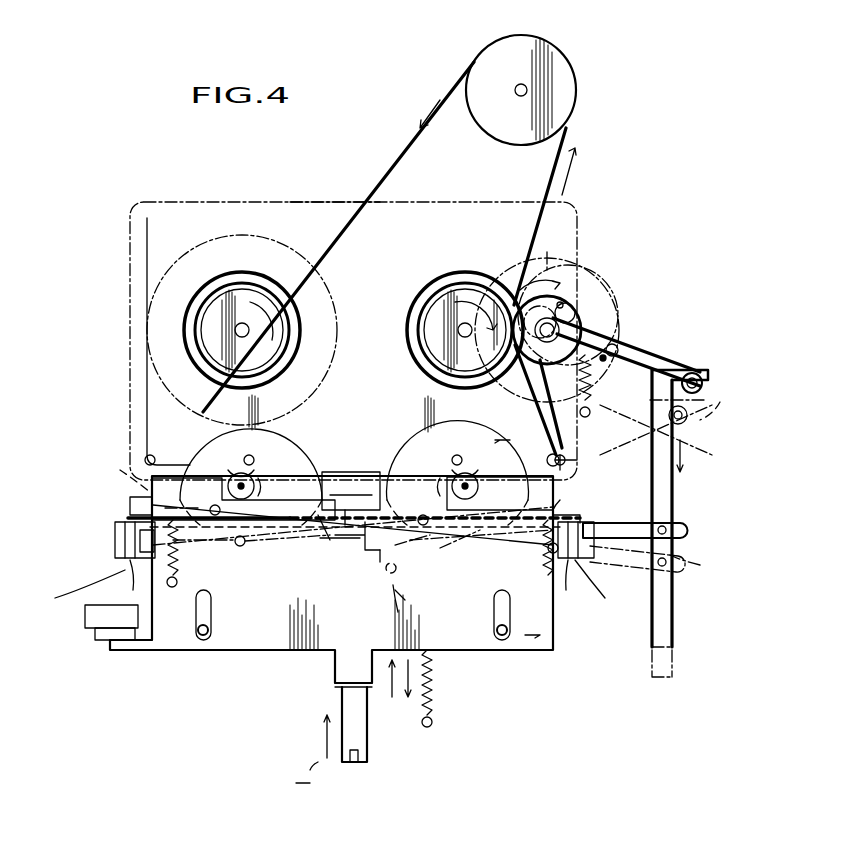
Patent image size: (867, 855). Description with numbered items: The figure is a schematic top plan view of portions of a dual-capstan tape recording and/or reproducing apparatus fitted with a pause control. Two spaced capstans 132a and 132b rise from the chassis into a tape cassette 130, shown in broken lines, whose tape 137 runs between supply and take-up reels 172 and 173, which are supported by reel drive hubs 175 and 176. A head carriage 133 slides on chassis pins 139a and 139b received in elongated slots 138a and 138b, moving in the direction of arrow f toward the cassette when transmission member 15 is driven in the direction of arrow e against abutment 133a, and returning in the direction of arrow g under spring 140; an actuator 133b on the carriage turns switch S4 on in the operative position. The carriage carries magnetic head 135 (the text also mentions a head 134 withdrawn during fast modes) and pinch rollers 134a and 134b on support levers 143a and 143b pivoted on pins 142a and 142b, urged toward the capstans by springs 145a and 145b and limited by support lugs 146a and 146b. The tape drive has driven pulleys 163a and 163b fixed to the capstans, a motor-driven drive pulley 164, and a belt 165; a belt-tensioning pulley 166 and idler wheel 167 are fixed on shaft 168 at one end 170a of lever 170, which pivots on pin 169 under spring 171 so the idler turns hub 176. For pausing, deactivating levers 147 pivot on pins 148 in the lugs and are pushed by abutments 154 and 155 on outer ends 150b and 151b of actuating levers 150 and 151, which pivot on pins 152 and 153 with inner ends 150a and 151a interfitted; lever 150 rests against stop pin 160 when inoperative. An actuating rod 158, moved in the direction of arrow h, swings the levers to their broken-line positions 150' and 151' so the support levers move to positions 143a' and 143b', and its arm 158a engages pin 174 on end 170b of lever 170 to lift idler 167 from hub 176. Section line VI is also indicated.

The drive pulley 164 is at (575, 85).
The belt 165 is at (430, 122).
The tape cassette 130 is at (465, 215).
The head 134 is at (340, 206).
The supply reel 172 is at (285, 300).
The take-up reel 173 is at (478, 292).
The reel drive hub 175 is at (300, 322).
The take-up reel drive hub 176 is at (413, 336).
The belt-tensioning pulley 166 is at (578, 290).
The one end of lever 170a is at (537, 275).
The idler wheel 167 is at (575, 312).
The pivot pin 169 is at (635, 335).
The lever 170 is at (592, 375).
The spring 171 is at (588, 416).
The shaft 168 is at (543, 405).
The actuating rod 158 is at (675, 487).
The arm 158a is at (678, 370).
The end portion of lever 170b is at (703, 385).
The pin 174 is at (668, 418).
The arrow h is at (689, 457).
The head carriage 133 is at (272, 650).
The abutment 133a is at (336, 684).
The actuator 133b is at (118, 650).
The transmission member 15 is at (368, 742).
The arrow e is at (313, 750).
The arrow f is at (387, 688).
The arrow g is at (408, 694).
The spring 140 is at (430, 718).
The switch S4 is at (100, 630).
The outer end portion of actuating lever 151b is at (126, 518).
The abutment 155 is at (128, 505).
The broken-line position of support lever 143a' is at (111, 468).
The support lug 146a is at (122, 545).
The pin 148 is at (138, 555).
The pinch roller deactivating lever 147 is at (343, 586).
The operative position of actuating lever 151' is at (68, 591).
The spring 145a is at (176, 578).
The support lever 143a is at (204, 577).
The pivot pin 142a is at (251, 549).
The elongated slot 138a is at (211, 608).
The pin 139a is at (209, 632).
The driven pulley 163a is at (298, 428).
The driven pulley 163b is at (410, 415).
The pinch roller 134a is at (235, 470).
The capstan 132a is at (254, 462).
The magnetic tape 137 is at (250, 473).
The magnetic head 135 is at (350, 470).
The pinch roller 134b is at (452, 475).
The capstan 132b is at (458, 455).
The section line VI is at (509, 544).
The pivot pin 142b is at (426, 525).
The support lever 143b is at (516, 566).
The broken-line position of support lever 143b' is at (591, 494).
The abutment 154 is at (570, 515).
The pivot pin 153 is at (310, 548).
The actuating lever 151 is at (330, 556).
The inner end of actuating lever 151a is at (358, 551).
The actuating lever 150 is at (405, 562).
The stop pin 160 is at (411, 601).
The inner end of actuating lever 150a is at (368, 603).
The pivot pin 152 is at (454, 553).
The elongated slot 138b is at (494, 608).
The pin 139b is at (497, 630).
The spring 145b is at (552, 578).
The support lug 146b is at (580, 560).
The outer end portion of actuating lever 150b is at (686, 532).
The operative position of actuating lever 150' is at (661, 579).